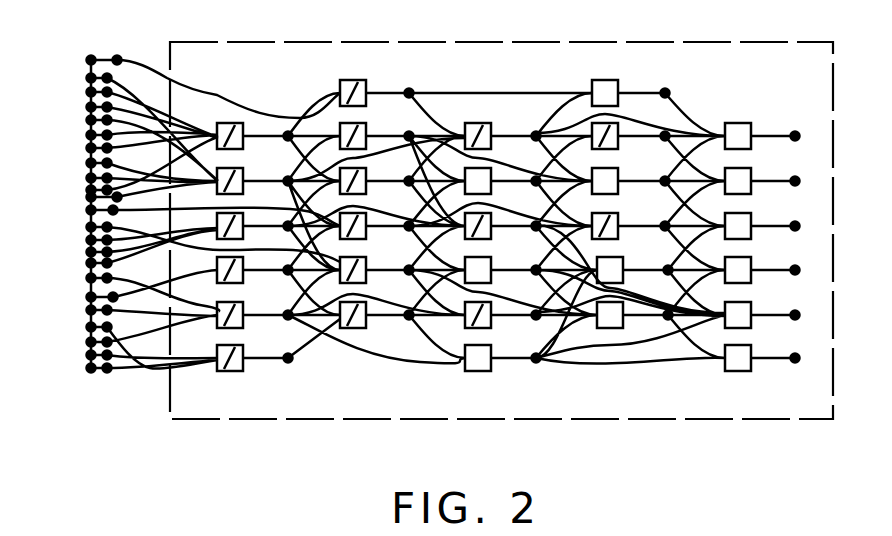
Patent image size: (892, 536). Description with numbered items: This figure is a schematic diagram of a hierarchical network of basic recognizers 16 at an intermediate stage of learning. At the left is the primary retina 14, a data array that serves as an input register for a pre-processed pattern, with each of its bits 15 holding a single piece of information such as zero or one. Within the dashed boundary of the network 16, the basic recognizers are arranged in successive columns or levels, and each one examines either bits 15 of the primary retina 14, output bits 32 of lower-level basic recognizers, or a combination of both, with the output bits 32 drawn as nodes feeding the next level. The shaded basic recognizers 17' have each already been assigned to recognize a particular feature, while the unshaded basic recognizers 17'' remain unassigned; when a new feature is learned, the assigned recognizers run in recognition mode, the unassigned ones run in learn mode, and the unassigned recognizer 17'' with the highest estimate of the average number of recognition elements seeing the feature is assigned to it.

The primary retina 14 is at (91, 368).
The bits 15 is at (91, 268).
The hierarchical network of basic recognizers 16 is at (205, 40).
The shaded basic recognizers 17' is at (400, 233).
The unshaded basic recognizers 17'' is at (599, 234).
The output bits 32 is at (409, 93).